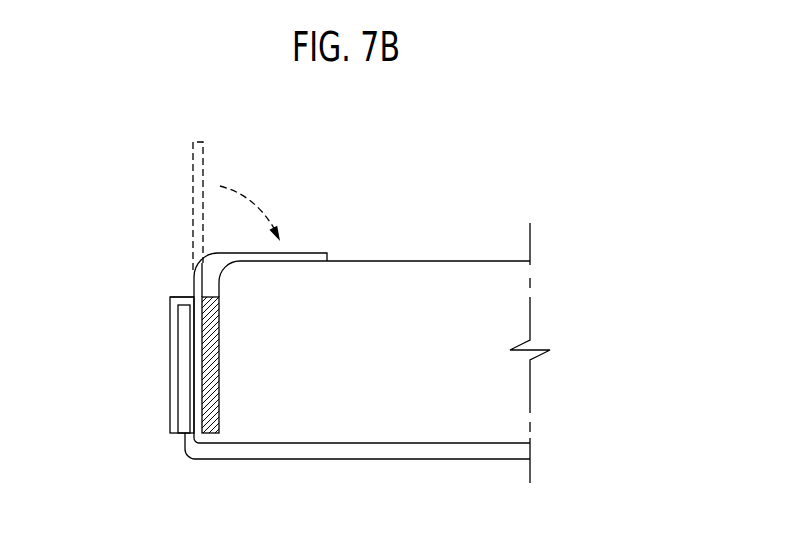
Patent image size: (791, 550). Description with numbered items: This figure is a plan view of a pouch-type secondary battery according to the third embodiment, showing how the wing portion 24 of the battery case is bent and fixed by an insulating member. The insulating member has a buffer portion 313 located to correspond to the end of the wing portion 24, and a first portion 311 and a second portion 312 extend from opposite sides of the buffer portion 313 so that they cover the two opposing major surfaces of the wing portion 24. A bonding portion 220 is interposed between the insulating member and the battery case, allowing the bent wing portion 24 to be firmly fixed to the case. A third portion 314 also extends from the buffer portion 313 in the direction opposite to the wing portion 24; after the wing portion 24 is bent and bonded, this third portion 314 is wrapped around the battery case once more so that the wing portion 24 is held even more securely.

The wing portion 24 is at (185, 422).
The bonding portion 220 is at (208, 363).
The first portion 311 is at (197, 360).
The second portion 312 is at (177, 335).
The buffer portion 313 is at (189, 296).
The third portion 314 is at (292, 257).